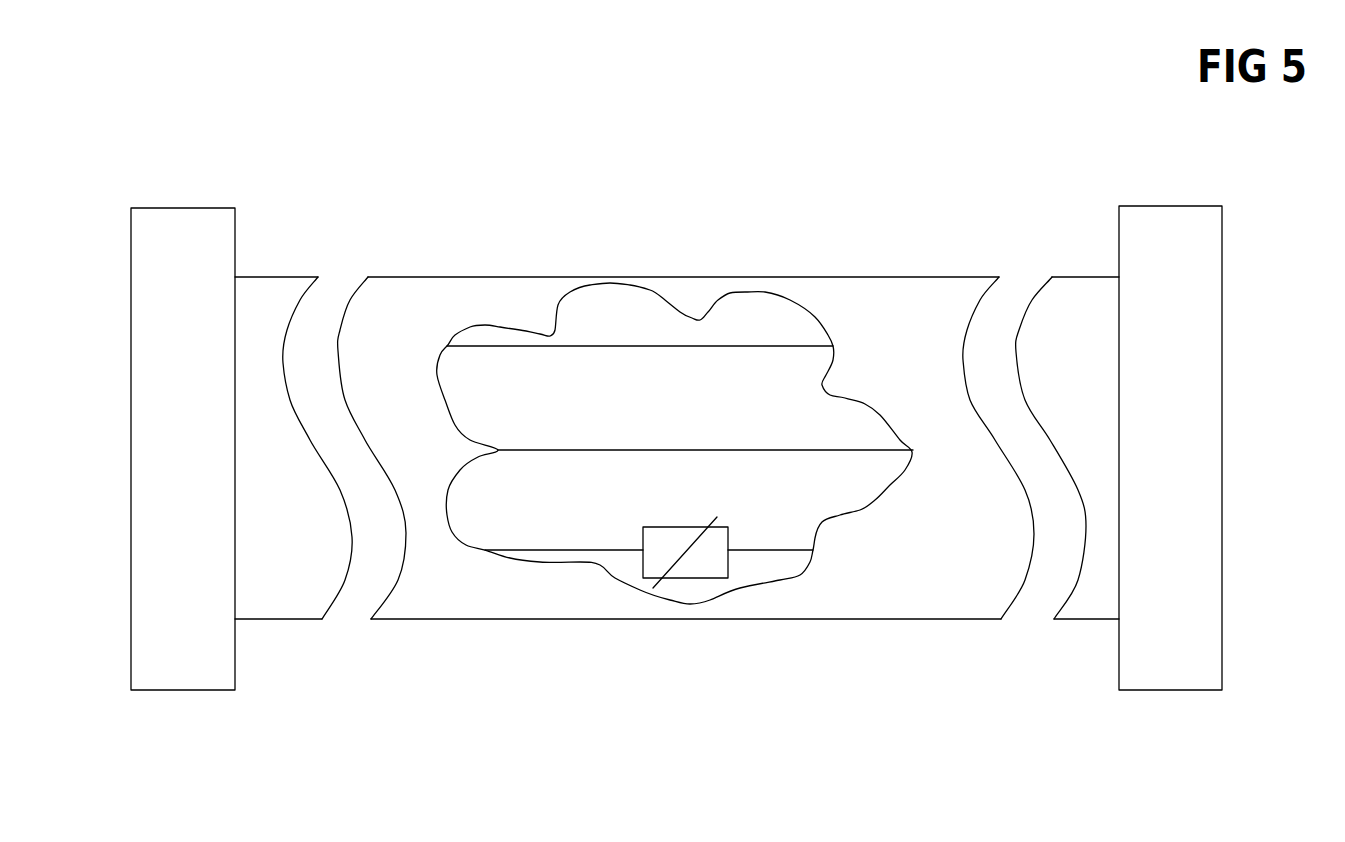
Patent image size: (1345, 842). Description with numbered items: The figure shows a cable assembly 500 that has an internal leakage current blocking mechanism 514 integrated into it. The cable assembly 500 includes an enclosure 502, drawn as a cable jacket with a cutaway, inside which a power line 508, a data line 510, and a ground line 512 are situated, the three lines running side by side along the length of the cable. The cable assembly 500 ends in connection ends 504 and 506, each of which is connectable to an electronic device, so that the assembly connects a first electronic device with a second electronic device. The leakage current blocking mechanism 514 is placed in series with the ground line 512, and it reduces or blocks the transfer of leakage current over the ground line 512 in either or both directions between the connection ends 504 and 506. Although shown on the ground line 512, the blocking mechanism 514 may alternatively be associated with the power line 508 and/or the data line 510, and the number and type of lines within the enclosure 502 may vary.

The cable assembly 500 is at (662, 700).
The enclosure 502 is at (968, 304).
The connection end 504 is at (203, 459).
The connection end 506 is at (1189, 460).
The power line 508 is at (789, 349).
The data line 510 is at (667, 450).
The ground line 512 is at (768, 550).
The leakage current blocking mechanism 514 is at (652, 529).